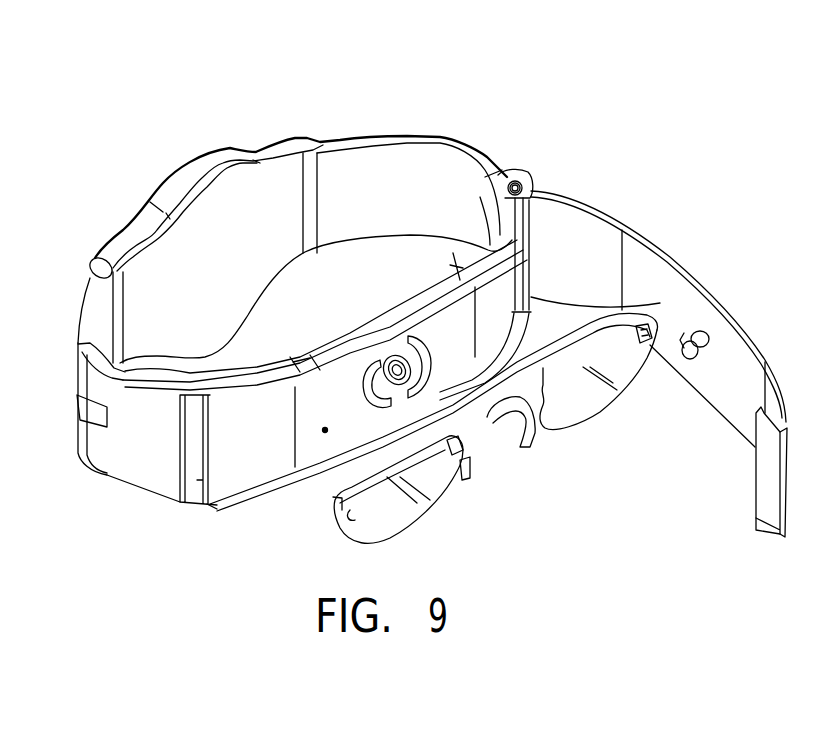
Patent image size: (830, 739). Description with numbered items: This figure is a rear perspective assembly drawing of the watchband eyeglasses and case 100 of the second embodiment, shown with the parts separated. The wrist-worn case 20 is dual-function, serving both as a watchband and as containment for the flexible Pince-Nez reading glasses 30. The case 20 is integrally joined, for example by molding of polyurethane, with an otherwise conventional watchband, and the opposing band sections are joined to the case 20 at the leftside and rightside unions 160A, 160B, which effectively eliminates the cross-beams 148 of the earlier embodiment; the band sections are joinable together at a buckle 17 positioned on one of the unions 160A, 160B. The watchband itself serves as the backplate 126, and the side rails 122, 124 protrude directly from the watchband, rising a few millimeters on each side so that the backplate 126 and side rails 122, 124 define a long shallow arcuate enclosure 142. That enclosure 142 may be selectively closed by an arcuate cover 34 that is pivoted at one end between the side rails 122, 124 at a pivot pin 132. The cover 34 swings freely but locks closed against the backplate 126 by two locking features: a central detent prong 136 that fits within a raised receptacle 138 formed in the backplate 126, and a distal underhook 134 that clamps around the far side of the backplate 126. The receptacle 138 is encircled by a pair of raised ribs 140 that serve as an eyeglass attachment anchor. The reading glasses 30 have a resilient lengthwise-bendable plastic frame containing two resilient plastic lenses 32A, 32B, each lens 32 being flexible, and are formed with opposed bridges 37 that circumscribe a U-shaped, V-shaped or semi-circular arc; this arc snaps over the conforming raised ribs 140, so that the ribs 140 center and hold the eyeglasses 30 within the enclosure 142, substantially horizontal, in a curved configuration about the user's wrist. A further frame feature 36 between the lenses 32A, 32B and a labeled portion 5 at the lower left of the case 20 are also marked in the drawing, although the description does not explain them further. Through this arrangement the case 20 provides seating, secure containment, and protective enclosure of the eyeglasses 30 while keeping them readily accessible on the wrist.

The watchband eyeglasses and case 100 is at (113, 103).
The wrist-worn case 20 is at (0, 158).
The pivot pin 132 is at (0, 192).
The side rail 122 is at (242, 367).
The resilient plastic lens 32 is at (447, 230).
The cross-beam 148 is at (474, 172).
The rightside union 160B is at (392, 191).
The leftside union 160A is at (152, 431).
The arcuate cover 34 is at (579, 197).
The distal underhook 134 is at (753, 527).
The central detent prong 136 is at (707, 340).
The raised receptacle 138 is at (392, 358).
The raised ribs 140 is at (367, 377).
The backplate 126 is at (267, 440).
The buckle 17 is at (77, 402).
The support post 5 is at (120, 478).
The side rail 124 is at (217, 507).
The enclosure 142 is at (325, 430).
The flexible Pince-Nez reading glasses 30 is at (512, 445).
The resilient plastic lens 32A is at (430, 510).
The resilient plastic lens 32B is at (615, 403).
The nose bridge 36 is at (500, 423).
The opposed bridges 37 is at (468, 480).